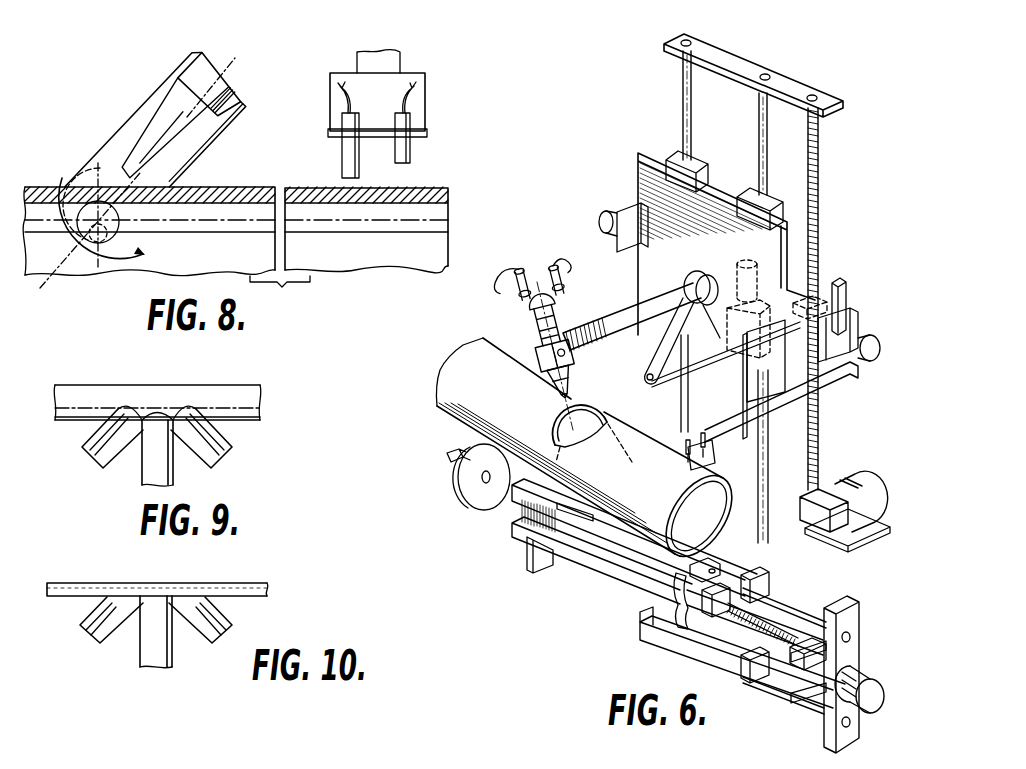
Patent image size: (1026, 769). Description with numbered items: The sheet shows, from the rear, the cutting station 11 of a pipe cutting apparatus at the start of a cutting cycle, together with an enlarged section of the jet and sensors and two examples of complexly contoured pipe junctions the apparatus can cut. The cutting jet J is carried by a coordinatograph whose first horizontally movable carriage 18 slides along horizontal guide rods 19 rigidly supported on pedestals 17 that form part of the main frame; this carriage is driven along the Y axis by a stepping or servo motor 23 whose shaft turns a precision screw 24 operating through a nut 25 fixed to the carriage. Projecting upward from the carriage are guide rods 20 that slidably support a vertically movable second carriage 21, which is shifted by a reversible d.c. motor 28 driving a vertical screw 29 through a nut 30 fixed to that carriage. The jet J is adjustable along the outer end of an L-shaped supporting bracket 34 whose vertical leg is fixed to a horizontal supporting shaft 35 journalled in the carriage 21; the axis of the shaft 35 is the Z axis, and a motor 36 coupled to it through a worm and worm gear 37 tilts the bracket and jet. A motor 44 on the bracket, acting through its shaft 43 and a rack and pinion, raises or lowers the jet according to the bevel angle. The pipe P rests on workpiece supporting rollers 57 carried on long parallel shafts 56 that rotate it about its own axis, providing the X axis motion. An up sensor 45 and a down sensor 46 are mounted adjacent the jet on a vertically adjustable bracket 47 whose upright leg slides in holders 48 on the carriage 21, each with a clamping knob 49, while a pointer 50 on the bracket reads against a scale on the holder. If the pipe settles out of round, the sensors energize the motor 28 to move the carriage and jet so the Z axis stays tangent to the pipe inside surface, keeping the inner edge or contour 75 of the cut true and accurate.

In FIG. 6, the cutting station 11 is at (584, 229).
In FIG. 6, the pedestals 17 is at (525, 556).
In FIG. 6, the first horizontally movable carriage 18 is at (664, 639).
In FIG. 6, the horizontal guide rods 19 is at (809, 610).
In FIG. 6, the guide rods 20 is at (759, 117).
In FIG. 6, the vertically movable second carriage 21 is at (641, 167).
In FIG. 6, the stepping or servo motor 23 is at (866, 682).
In FIG. 6, the precision screw 24 is at (735, 622).
In FIG. 6, the nut 25 is at (703, 613).
In FIG. 6, the reversible d.c. motor 28 is at (864, 484).
In FIG. 6, the vertical screw 29 is at (820, 425).
In FIG. 6, the nut 30 is at (800, 304).
In FIG. 8, the L-shaped supporting bracket 34 is at (142, 102).
In FIG. 8, the horizontal supporting shaft 35 is at (70, 172).
In FIG. 6, the horizontal supporting shaft 35 is at (655, 382).
In FIG. 6, the stepping or servo motor 36 is at (738, 279).
In FIG. 6, the worm and worm gear 37 is at (742, 356).
In FIG. 6, the shaft 43 is at (652, 320).
In FIG. 6, the stepping or servo motor 44 is at (693, 271).
In FIG. 8, the up sensor 45 is at (429, 175).
In FIG. 6, the up sensor 45 is at (692, 471).
In FIG. 8, the down sensor 46 is at (342, 173).
In FIG. 6, the down sensor 46 is at (676, 455).
In FIG. 8, the vertically adjustable bracket 47 is at (384, 62).
In FIG. 6, the vertically adjustable bracket 47 is at (745, 437).
In FIG. 6, the holders 48 is at (617, 243).
In FIG. 6, the clamping knob 49 is at (608, 214).
In FIG. 6, the pointer 50 is at (858, 318).
In FIG. 6, the shafts 56 is at (448, 456).
In FIG. 6, the workpiece supporting rollers 57 is at (460, 490).
In FIG. 8, the inner edge or contour 75 is at (117, 225).
In FIG. 8, the cutting jet J is at (173, 100).
In FIG. 6, the cutting jet J is at (530, 333).
In FIG. 8, the pipe P is at (241, 186).
In FIG. 6, the pipe P is at (437, 405).
In FIG. 6, the X axis X is at (444, 335).
In FIG. 6, the Y axis Y is at (920, 725).
In FIG. 6, the Z axis Z is at (538, 432).